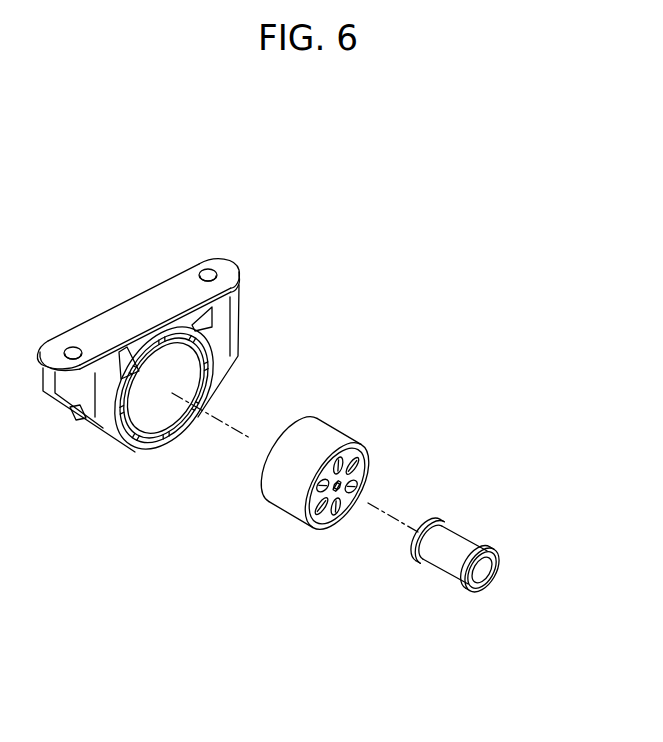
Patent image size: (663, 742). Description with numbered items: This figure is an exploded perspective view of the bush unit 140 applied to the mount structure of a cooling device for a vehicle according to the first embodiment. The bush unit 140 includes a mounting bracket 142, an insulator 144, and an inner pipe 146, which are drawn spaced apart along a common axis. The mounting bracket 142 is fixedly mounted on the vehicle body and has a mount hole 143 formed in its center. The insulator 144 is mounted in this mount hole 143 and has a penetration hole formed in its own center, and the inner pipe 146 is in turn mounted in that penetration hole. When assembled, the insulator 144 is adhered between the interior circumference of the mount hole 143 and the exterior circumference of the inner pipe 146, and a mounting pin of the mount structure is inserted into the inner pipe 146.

The bush unit 140 is at (430, 270).
The mounting bracket 142 is at (225, 323).
The mount hole 143 is at (187, 372).
The insulator 144 is at (299, 488).
The inner pipe 146 is at (448, 567).